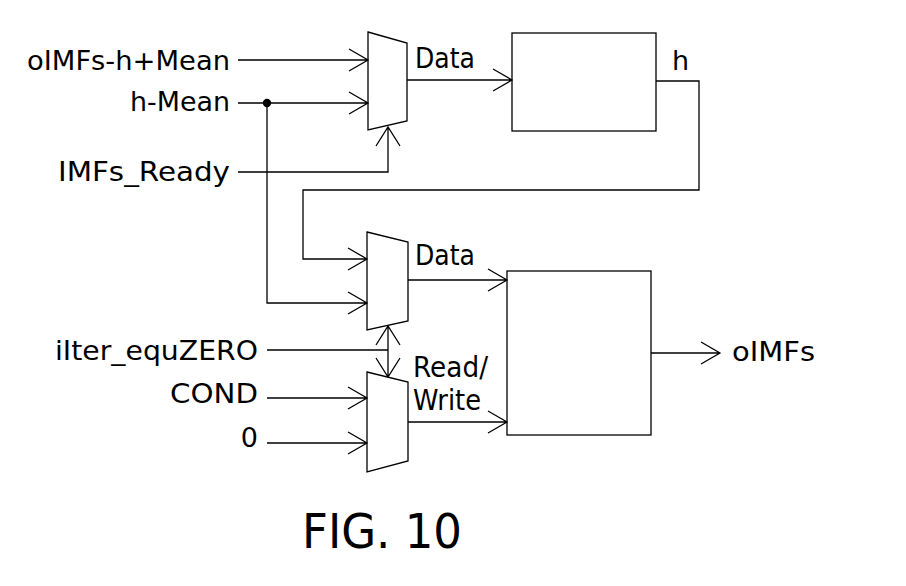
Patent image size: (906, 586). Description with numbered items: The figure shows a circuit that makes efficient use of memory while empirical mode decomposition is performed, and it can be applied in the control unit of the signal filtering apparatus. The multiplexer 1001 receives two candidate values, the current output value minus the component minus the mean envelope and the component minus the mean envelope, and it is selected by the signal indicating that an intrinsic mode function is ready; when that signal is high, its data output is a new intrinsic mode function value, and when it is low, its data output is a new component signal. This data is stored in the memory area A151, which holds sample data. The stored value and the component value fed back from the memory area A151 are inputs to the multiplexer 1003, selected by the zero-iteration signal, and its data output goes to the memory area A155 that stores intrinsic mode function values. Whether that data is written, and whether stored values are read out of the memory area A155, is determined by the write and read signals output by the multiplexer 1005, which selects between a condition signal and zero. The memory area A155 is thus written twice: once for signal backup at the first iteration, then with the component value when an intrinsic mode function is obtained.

The multiplexer 1001 is at (388, 32).
The multiplexer 1003 is at (388, 232).
The multiplexer 1005 is at (385, 465).
The memory area A151 is at (568, 33).
The memory area A155 is at (562, 271).